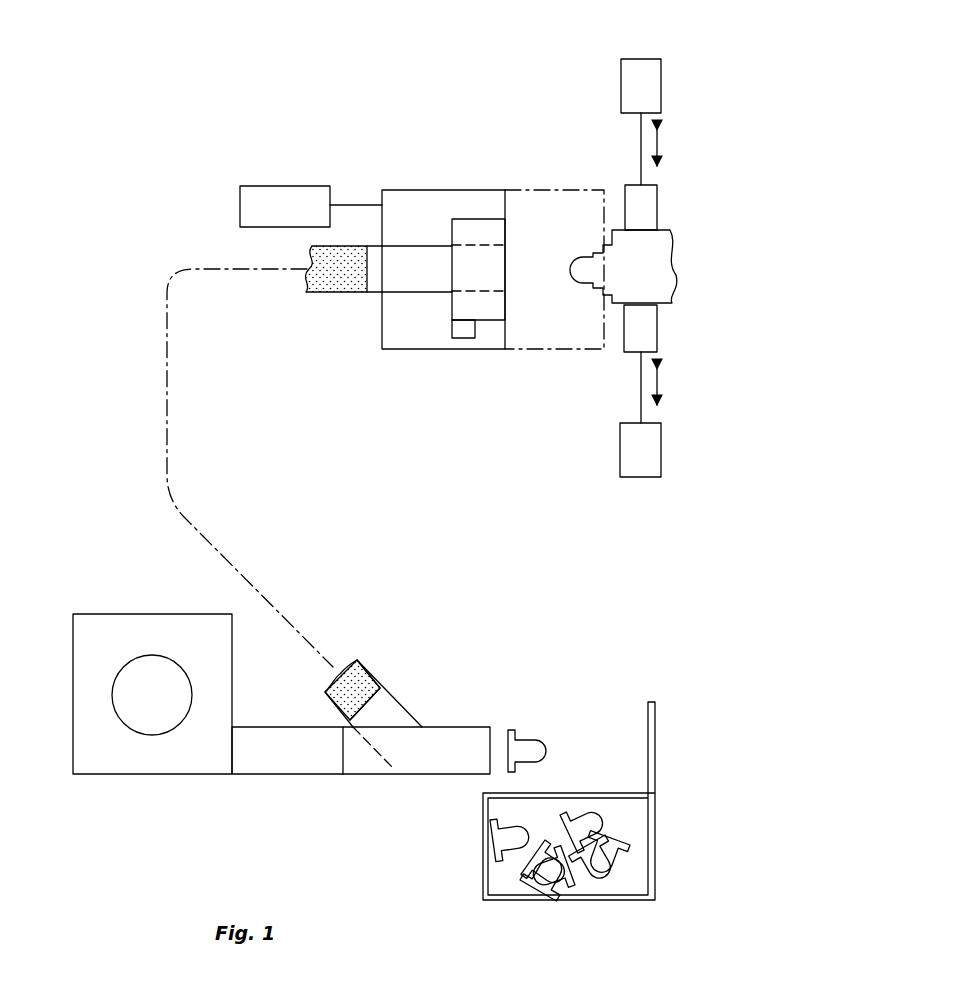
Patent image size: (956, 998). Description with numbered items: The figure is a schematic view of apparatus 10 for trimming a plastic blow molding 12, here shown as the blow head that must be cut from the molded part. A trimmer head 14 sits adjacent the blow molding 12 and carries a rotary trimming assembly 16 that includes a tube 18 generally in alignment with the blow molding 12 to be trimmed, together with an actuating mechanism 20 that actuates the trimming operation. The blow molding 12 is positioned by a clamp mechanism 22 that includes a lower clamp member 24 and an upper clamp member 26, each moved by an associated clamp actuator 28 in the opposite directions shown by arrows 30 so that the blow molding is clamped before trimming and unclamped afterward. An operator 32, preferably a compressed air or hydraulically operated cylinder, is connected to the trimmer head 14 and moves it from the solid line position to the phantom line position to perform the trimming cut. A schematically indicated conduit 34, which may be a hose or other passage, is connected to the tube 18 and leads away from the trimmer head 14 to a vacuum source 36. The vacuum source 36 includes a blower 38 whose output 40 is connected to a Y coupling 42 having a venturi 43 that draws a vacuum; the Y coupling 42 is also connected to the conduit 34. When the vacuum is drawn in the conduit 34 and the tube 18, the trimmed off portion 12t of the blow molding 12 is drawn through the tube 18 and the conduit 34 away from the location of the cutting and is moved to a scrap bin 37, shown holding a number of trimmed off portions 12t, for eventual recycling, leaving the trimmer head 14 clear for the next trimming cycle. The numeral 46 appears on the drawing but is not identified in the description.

The apparatus 10 is at (170, 146).
The plastic blow molding 12 is at (653, 260).
The trimmed off portion 12t is at (527, 732).
The trimmer head 14 is at (582, 350).
The rotary trimming assembly 16 is at (477, 216).
The tube 18 is at (418, 245).
The actuating mechanism 20 is at (447, 333).
The clamp mechanism 22 is at (606, 50).
The lower clamp member 24 is at (643, 330).
The upper clamp member 26 is at (627, 195).
The clamp actuators 28 is at (630, 80).
The arrows 30 is at (662, 152).
The operator 32 is at (287, 186).
The conduit 34 is at (167, 388).
The vacuum source 36 is at (131, 800).
The scrap bin 37 is at (657, 827).
The blower 38 is at (172, 774).
The output 40 is at (255, 774).
The Y coupling 42 is at (375, 768).
The venturi 43 is at (395, 768).
The elongated stock 46 is at (450, 296).